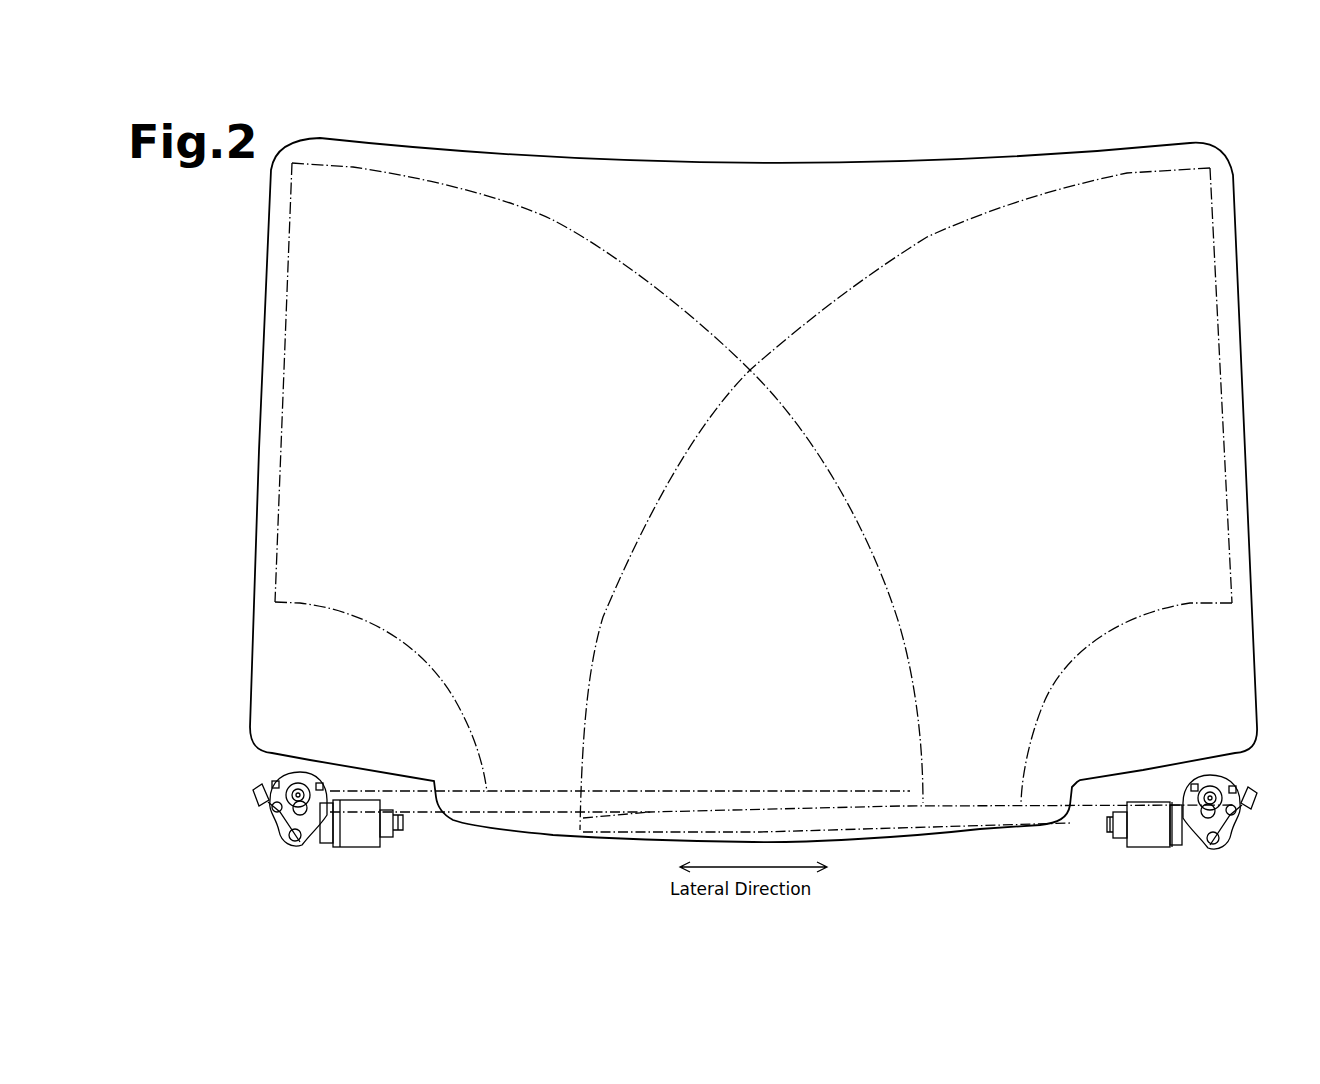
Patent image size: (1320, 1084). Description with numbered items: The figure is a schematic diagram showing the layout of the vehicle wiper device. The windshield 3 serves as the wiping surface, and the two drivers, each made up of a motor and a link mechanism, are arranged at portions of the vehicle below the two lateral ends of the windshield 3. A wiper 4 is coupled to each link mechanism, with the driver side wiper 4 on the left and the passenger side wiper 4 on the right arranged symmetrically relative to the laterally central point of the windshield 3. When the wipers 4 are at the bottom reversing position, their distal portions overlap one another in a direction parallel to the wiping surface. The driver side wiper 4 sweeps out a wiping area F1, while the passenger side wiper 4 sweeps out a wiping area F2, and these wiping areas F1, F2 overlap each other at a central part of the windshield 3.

The windshield 3 is at (790, 175).
The wiper 4 is at (720, 787).
The wiping area F1 is at (573, 236).
The wiping area F2 is at (893, 257).